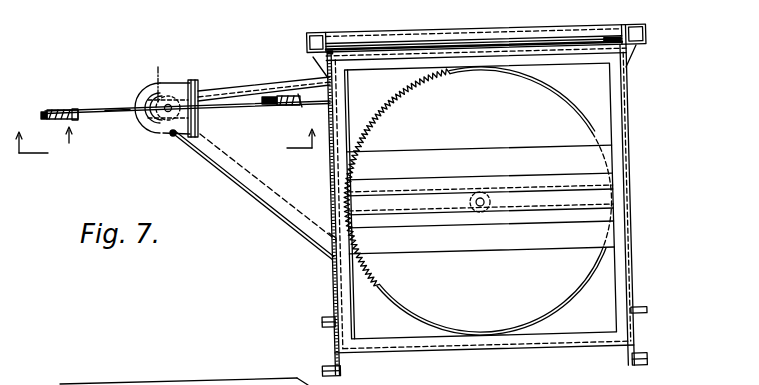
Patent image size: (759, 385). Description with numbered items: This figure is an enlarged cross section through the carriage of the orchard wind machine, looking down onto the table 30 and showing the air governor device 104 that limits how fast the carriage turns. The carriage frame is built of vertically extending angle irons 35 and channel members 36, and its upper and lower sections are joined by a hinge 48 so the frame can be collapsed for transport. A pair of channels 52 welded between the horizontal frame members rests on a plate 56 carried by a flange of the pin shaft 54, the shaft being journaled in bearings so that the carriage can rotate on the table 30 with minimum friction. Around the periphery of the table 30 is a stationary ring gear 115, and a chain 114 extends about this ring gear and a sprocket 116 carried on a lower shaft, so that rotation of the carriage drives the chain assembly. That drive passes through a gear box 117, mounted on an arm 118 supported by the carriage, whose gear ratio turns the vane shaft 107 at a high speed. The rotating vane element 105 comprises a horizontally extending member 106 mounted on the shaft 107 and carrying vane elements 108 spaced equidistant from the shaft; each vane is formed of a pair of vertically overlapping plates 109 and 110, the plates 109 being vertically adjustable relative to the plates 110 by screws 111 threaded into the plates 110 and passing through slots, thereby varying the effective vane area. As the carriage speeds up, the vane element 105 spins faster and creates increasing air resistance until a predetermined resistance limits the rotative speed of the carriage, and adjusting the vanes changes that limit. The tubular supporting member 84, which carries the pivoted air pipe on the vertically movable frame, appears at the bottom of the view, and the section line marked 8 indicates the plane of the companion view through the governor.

The section line 8- 8 is at (165, 155).
The table 30 is at (593, 131).
The angle irons 35 is at (346, 50).
The channel members 36 is at (328, 315).
The hinge 48 is at (637, 22).
The channels 52 is at (610, 212).
The pin shaft 54 is at (484, 195).
The plate 56 is at (594, 160).
The tubular supporting member 84 is at (232, 384).
The governor device 104 is at (219, 72).
The rotating vane element 105 is at (110, 98).
The horizontally extending member 106 is at (117, 112).
The shaft 107 is at (172, 135).
The vane elements 108 is at (75, 143).
The plates 109 is at (61, 119).
The plates 110 is at (43, 111).
The screws 111 is at (64, 109).
The chain 114 is at (289, 219).
The ring gear 115 is at (386, 105).
The sprocket 116 is at (173, 78).
The gear box 117 is at (143, 126).
The arm 118 is at (266, 184).